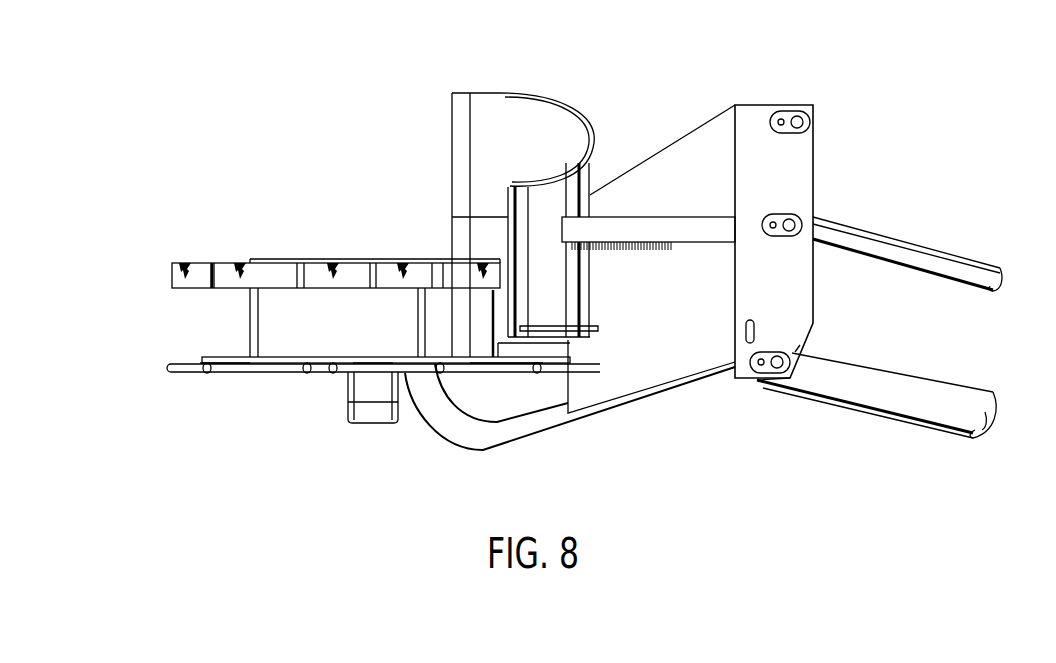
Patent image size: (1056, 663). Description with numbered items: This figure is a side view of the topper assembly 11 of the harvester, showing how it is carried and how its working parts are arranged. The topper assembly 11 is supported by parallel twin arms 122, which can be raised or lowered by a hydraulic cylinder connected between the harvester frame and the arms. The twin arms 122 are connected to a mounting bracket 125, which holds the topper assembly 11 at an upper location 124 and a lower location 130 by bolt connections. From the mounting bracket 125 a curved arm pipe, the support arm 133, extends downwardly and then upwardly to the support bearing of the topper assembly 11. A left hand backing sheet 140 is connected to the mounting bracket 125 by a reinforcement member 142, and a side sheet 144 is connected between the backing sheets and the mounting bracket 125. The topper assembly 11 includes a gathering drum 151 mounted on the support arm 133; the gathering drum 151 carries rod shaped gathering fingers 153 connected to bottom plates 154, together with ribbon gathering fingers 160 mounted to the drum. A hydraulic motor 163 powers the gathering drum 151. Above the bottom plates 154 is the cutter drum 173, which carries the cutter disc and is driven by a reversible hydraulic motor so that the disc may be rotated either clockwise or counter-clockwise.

The topper assembly 11 is at (276, 84).
The twin arms 122 is at (897, 265).
The upper location 124 is at (801, 225).
The mounting bracket 125 is at (816, 168).
The lower location 130 is at (800, 363).
The left arm pipe 133 is at (553, 432).
The left hand backing sheet 140 is at (593, 190).
The reinforcement member 142 is at (683, 137).
The side sheet 144 is at (672, 243).
The gathering drum 151 is at (250, 328).
The rod shaped gathering fingers 153 is at (307, 366).
The bottom plates 154 is at (338, 366).
The ribbon gathering fingers 160 is at (236, 265).
The hydraulic motor 163 is at (375, 428).
The cutter drum 173 is at (455, 240).